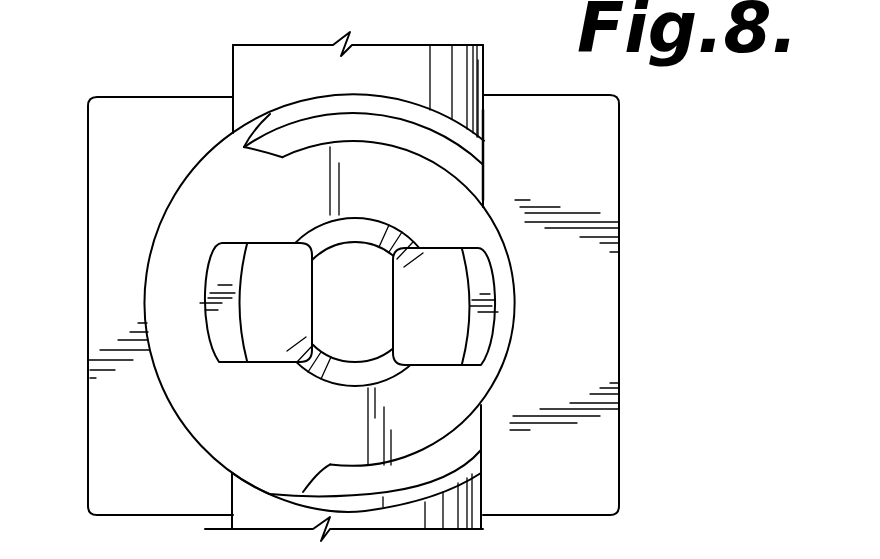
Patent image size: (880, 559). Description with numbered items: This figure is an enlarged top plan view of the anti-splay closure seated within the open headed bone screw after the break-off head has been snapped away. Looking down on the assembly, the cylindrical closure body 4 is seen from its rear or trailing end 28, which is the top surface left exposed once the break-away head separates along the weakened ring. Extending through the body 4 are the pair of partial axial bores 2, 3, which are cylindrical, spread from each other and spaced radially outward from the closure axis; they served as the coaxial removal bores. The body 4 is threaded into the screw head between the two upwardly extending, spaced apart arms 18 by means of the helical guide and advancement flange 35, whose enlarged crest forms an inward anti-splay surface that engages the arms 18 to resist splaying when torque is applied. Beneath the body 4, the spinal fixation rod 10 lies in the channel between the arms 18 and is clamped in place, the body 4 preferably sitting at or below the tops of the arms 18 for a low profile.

The partial axial bore 2 is at (241, 313).
The partial axial bore 3 is at (470, 313).
The closure body 4 is at (272, 112).
The spinal fixation rod 10 is at (232, 71).
The arm 18 is at (88, 155).
The rear end 28 is at (208, 191).
The guide and advancement flange 35 is at (484, 128).